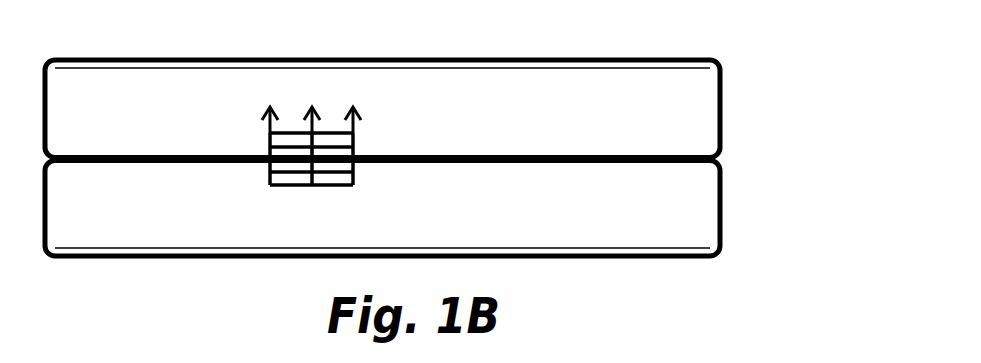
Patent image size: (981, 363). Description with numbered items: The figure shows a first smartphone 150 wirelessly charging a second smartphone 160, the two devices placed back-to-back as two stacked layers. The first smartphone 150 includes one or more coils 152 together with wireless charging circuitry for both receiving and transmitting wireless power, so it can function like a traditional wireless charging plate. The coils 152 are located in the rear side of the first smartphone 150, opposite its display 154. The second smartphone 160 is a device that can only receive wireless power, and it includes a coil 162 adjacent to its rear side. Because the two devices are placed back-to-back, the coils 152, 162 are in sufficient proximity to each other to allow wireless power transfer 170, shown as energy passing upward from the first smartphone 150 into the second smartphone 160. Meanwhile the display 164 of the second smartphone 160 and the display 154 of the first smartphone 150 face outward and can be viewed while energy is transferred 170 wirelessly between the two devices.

The first smartphone 150 is at (723, 202).
The coil 152 is at (290, 187).
The display 154 is at (637, 254).
The second smartphone 160 is at (723, 110).
The coil 162 is at (292, 130).
The display 164 is at (580, 61).
The wireless power transfer 170 is at (372, 117).